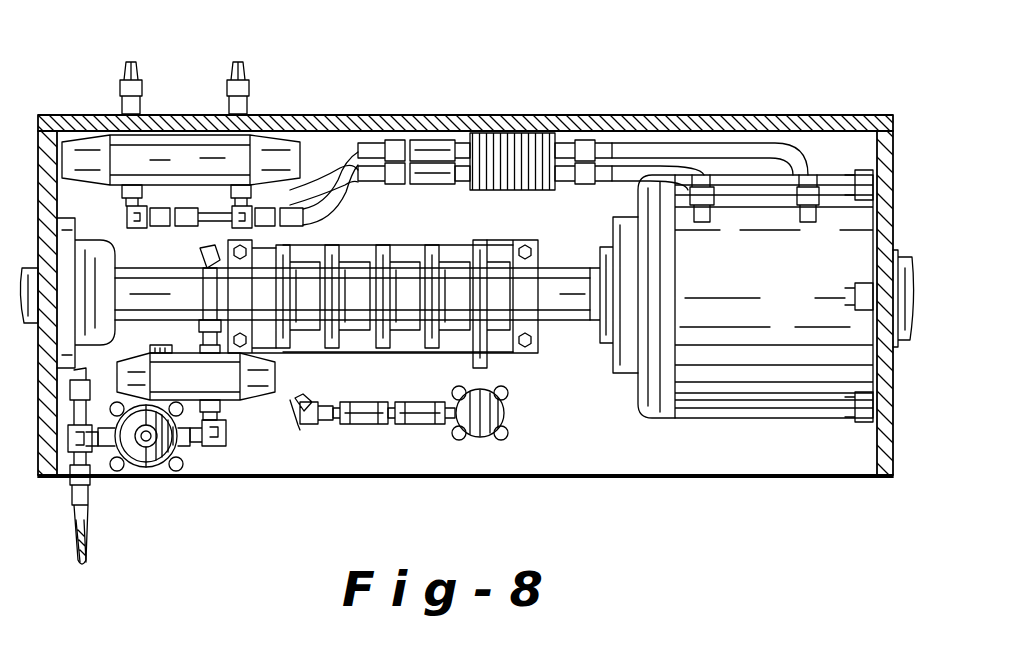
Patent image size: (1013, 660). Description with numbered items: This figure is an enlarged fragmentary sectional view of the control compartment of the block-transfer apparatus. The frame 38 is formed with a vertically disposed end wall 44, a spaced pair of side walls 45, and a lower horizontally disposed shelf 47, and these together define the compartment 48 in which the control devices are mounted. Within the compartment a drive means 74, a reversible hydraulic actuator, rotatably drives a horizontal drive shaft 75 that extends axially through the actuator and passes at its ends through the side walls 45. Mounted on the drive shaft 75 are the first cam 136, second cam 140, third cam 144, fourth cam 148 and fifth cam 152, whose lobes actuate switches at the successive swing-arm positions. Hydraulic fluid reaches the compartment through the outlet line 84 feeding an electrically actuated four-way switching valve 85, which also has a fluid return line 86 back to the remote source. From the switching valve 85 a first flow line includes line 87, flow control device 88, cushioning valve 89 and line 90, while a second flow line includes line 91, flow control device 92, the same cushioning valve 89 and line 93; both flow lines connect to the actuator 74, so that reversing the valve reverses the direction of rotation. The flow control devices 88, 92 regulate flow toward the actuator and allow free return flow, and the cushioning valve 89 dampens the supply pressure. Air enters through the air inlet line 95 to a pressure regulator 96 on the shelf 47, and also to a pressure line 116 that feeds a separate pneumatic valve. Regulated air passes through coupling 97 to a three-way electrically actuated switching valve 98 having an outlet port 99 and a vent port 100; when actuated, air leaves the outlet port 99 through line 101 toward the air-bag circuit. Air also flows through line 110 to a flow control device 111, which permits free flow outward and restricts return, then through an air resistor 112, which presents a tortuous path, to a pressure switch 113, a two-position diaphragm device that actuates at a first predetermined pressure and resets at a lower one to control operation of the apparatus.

The frame 38 is at (758, 116).
The end wall 44 is at (548, 122).
The side walls 45 is at (40, 163).
The lower shelf 47 is at (714, 477).
The compartment 48 is at (610, 456).
The drive means 74 is at (815, 420).
The drive shaft 75 is at (585, 322).
The outlet line 84 is at (240, 62).
The 4-way switching valve 85 is at (172, 140).
The fluid return line 86 is at (135, 62).
The line 87 is at (343, 145).
The flow control device 88 is at (420, 140).
The cushioning valve 89 is at (500, 133).
The line 90 is at (715, 143).
The line 91 is at (325, 150).
The flow control device 92 is at (440, 165).
The line 93 is at (680, 140).
The air inlet line 95 is at (92, 553).
The pressure regulator 96 is at (157, 468).
The coupling 97 is at (228, 438).
The 3-way switching valve 98 is at (250, 398).
The outlet port 99 is at (265, 360).
The vent port 100 is at (163, 345).
The line 101 is at (206, 248).
The line 110 is at (308, 428).
The flow control device 111 is at (370, 428).
The air resistor 112 is at (422, 428).
The pressure switch 113 is at (505, 425).
The pressure line 116 is at (70, 398).
The first cam 136 is at (500, 250).
The second cam 140 is at (450, 250).
The third cam 144 is at (393, 248).
The fourth cam 148 is at (352, 245).
The fifth cam 152 is at (310, 252).